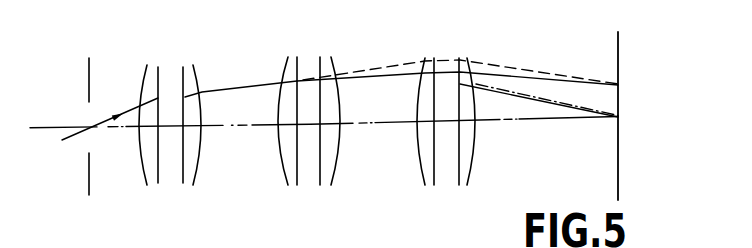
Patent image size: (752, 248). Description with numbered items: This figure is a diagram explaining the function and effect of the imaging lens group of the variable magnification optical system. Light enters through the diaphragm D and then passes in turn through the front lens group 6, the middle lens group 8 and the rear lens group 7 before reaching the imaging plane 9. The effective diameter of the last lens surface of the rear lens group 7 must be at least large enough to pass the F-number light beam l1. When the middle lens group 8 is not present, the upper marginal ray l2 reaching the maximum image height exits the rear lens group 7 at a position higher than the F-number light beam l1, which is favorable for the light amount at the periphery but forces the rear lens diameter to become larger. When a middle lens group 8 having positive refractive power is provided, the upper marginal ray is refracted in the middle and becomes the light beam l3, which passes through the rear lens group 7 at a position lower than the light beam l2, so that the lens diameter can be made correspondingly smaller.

The diaphragm D is at (90, 70).
The front lens group 6 is at (133, 195).
The middle lens group 8 is at (275, 195).
The rear lens group 7 is at (413, 195).
The imaging plane 9 is at (617, 48).
The F-number light beam l1 is at (547, 102).
The upper marginal ray l2 is at (403, 63).
The refracted light beam l3 is at (403, 77).